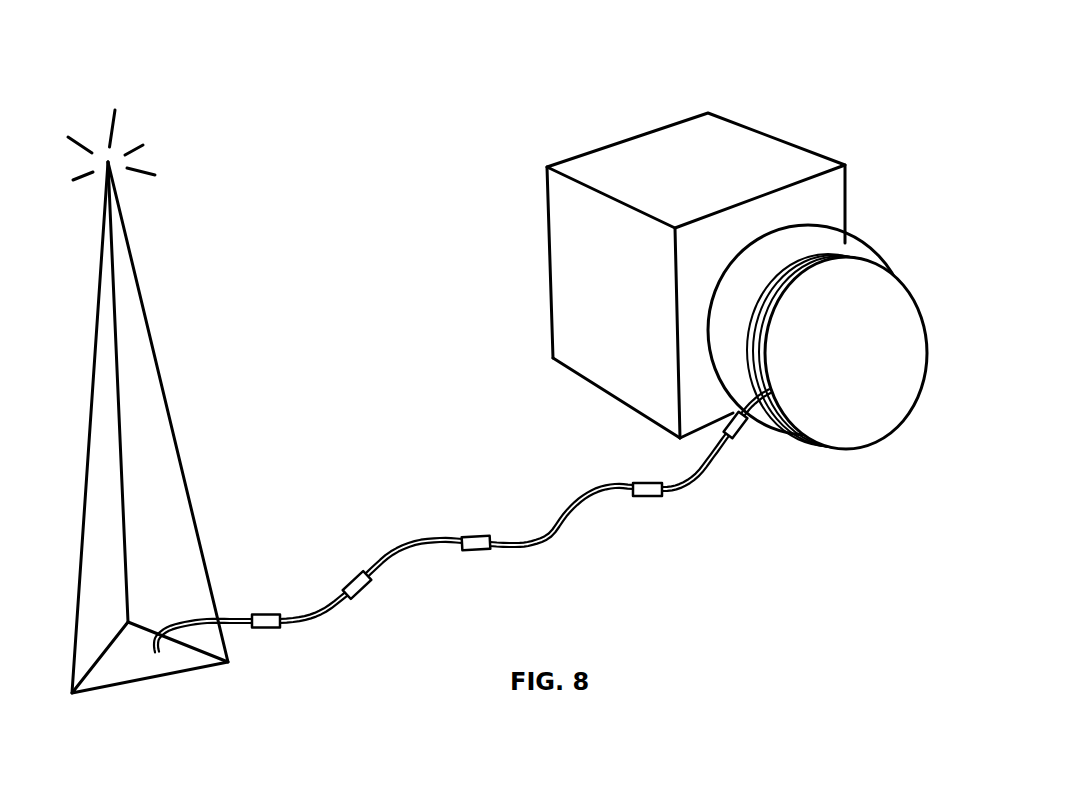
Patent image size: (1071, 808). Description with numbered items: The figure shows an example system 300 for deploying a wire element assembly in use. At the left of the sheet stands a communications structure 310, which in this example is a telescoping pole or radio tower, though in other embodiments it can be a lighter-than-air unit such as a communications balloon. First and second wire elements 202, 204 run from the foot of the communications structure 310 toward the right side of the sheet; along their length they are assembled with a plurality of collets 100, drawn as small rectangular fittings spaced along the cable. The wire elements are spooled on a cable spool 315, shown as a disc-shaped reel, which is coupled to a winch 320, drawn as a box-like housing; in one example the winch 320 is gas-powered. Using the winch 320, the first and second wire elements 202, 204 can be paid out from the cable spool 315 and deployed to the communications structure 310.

The system 300 is at (187, 102).
The communications structure 310 is at (145, 313).
The winch 320 is at (623, 287).
The cable spool 315 is at (858, 364).
The collet 100 is at (462, 520).
The first wire element 202 is at (543, 535).
The second wire element 204 is at (562, 532).